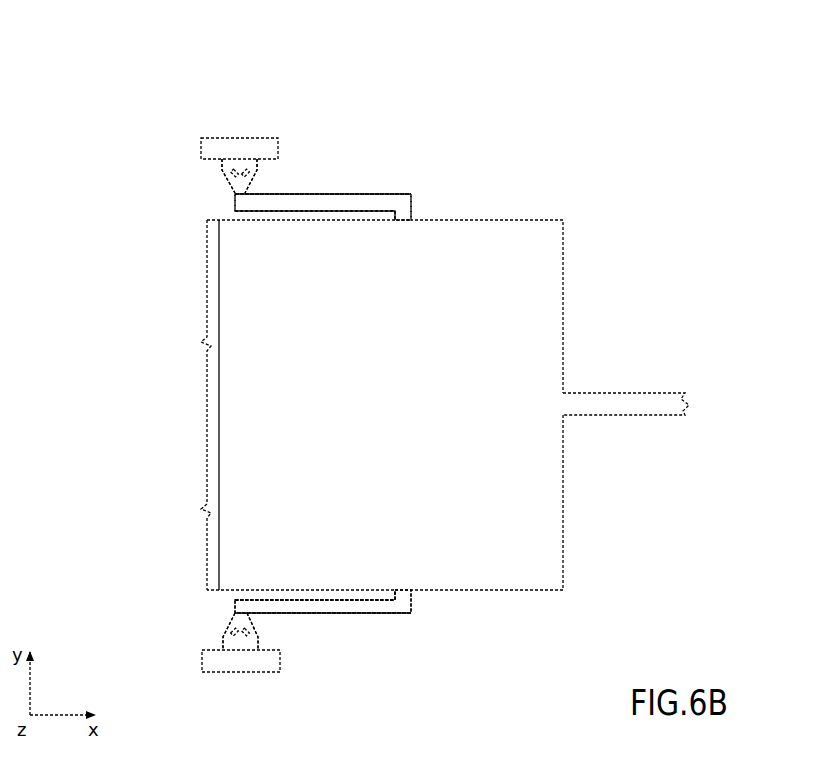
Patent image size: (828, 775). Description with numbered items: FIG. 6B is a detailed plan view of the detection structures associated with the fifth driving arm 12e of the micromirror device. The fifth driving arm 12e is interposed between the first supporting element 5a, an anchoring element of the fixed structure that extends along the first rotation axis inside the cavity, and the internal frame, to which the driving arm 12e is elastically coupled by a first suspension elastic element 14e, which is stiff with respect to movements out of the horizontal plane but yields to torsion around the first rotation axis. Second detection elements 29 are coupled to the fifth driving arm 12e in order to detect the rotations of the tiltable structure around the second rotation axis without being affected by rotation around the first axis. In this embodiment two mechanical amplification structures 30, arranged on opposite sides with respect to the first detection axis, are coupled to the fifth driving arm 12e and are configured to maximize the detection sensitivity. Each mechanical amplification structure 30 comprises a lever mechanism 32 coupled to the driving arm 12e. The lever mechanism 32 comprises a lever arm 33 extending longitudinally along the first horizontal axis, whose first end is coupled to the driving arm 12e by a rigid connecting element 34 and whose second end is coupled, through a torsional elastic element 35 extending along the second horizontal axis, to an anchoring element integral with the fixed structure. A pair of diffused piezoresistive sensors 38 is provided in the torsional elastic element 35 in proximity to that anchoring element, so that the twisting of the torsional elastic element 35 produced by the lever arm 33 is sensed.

The fifth driving arm 12e is at (508, 355).
The first suspension elastic element 14e is at (603, 411).
The first supporting element 5a is at (208, 422).
The second detection elements 29 is at (186, 196).
The mechanical amplification structure 30 is at (315, 176).
The lever mechanism 32 is at (338, 201).
The lever arm 33 is at (373, 205).
The rigid connecting element 34 is at (403, 214).
The torsional elastic element 35 is at (236, 188).
The diffused piezoresistive sensors 38 is at (247, 183).